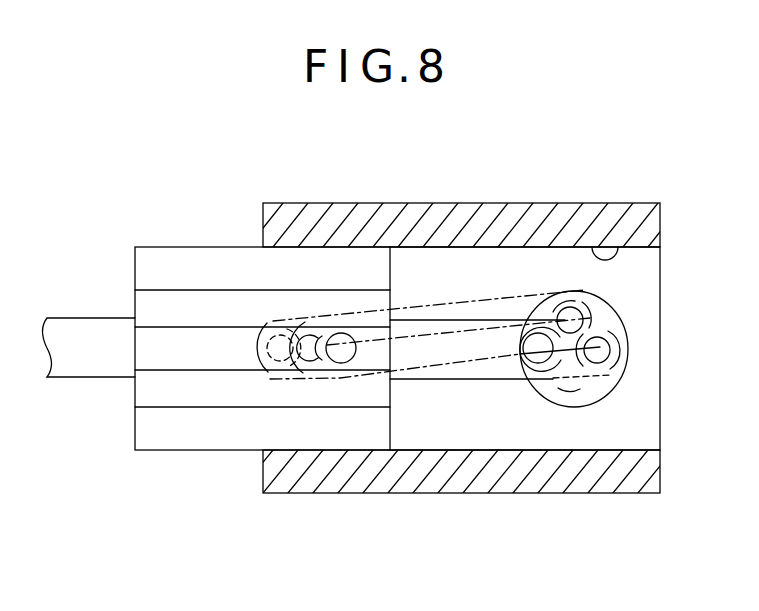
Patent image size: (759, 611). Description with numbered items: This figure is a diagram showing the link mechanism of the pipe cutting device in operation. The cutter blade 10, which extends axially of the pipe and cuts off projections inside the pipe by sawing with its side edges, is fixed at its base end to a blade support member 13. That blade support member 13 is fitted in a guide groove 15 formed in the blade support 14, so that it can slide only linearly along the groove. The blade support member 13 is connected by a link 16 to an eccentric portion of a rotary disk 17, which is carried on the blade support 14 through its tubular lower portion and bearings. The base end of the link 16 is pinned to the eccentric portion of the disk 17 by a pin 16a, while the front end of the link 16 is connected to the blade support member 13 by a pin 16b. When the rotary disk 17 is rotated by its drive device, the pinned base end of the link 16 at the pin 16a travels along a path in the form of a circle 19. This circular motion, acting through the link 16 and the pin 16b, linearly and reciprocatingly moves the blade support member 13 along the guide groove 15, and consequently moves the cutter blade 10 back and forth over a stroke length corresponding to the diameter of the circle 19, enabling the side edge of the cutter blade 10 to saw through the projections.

The cutter blade 10 is at (85, 330).
The blade support member 13 is at (192, 310).
The blade support 14 is at (573, 220).
The guide groove 15 is at (618, 247).
The link 16 is at (438, 318).
The pin 16a is at (538, 363).
The pin 16b is at (275, 360).
The rotary disk 17 is at (607, 393).
The circle 19 is at (588, 345).